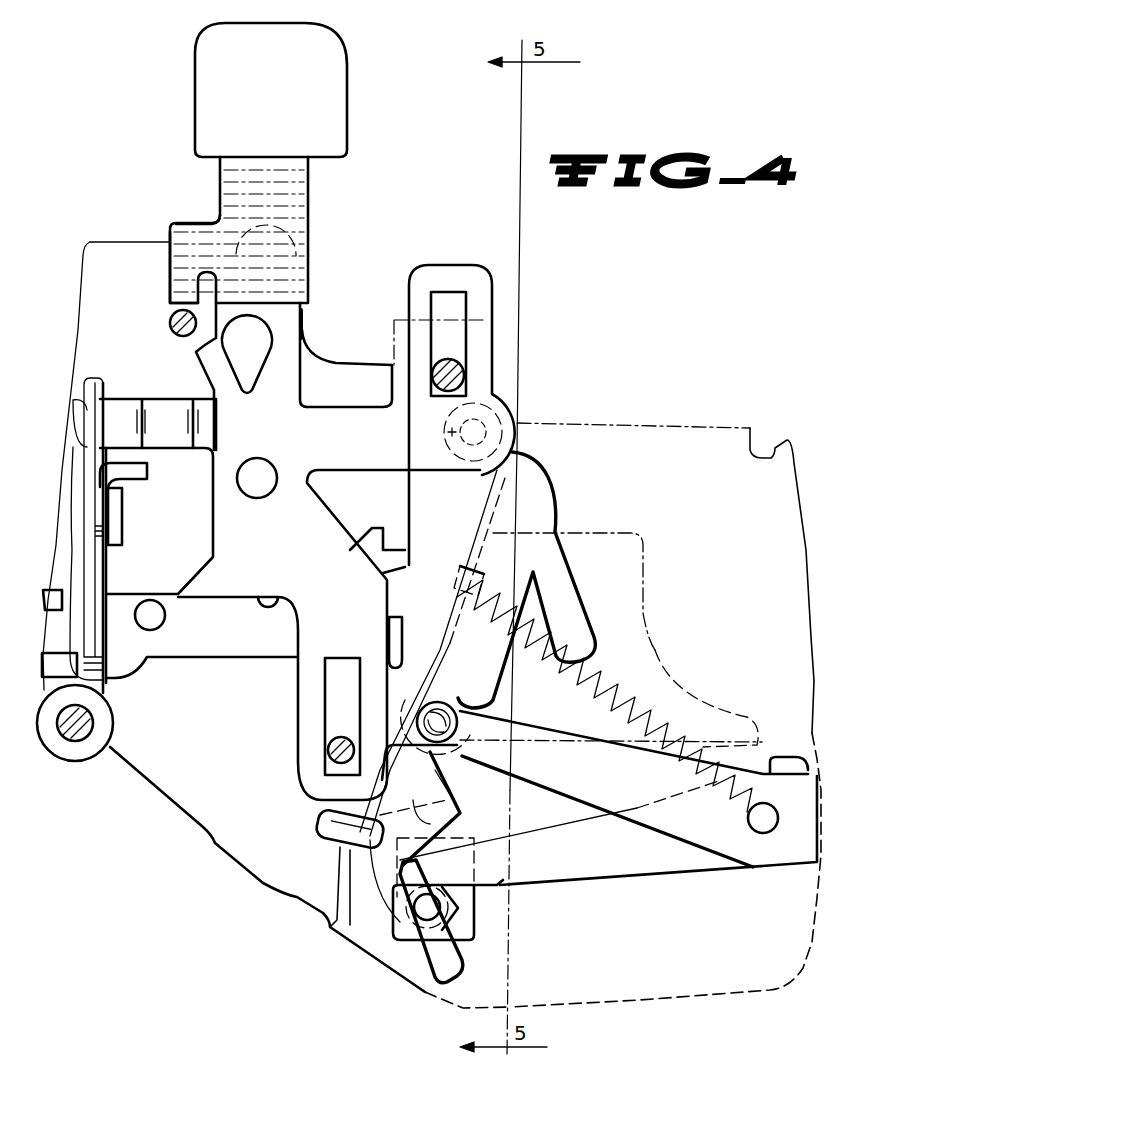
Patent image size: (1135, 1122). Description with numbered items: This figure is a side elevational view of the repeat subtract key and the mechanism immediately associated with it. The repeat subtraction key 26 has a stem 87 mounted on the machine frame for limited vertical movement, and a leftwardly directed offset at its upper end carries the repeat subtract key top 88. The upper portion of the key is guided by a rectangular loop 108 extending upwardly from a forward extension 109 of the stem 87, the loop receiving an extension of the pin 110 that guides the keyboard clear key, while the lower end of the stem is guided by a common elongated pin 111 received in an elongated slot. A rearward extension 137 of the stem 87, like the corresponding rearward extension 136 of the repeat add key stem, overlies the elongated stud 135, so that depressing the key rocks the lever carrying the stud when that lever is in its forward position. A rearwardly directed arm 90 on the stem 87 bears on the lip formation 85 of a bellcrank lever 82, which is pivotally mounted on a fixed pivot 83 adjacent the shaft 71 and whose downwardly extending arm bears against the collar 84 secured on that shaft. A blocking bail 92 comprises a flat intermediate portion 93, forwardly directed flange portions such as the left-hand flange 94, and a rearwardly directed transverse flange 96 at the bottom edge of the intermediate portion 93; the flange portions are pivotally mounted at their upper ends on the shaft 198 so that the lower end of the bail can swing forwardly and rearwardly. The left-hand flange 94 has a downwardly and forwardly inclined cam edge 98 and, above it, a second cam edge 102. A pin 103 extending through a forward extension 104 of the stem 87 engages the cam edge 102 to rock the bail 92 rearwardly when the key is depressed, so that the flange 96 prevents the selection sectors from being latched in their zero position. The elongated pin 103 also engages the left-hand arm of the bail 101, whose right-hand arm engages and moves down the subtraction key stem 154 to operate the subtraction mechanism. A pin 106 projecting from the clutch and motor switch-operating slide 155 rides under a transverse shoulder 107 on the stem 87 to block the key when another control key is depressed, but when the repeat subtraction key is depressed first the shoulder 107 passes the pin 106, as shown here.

The repeat subtract key top 88 is at (205, 120).
The repeat subtraction key 26 is at (210, 158).
The rearward extension 136 is at (195, 222).
The rearward extension 137 is at (170, 272).
The elongated stud 135 is at (170, 323).
The stem 87 is at (302, 324).
The forward extension 109 is at (365, 408).
The rectangular loop 108 is at (408, 292).
The pin 110 is at (462, 376).
The shaft 198 is at (448, 433).
The rearwardly directed arm 90 is at (172, 402).
The lip formation 85 is at (128, 480).
The fixed pivot 83 is at (122, 531).
The bellcrank lever 82 is at (103, 574).
The transverse shoulder 107 is at (238, 596).
The pin 106 is at (156, 628).
The left-hand clutch and motor switch-operating slide 155 is at (236, 655).
The elongated pin 111 is at (322, 768).
The collar 84 is at (82, 758).
The shaft 71 is at (95, 724).
The flange portion 94 is at (533, 478).
The blocking bail 92 is at (388, 630).
The bail 101 is at (555, 780).
The pin 103 is at (452, 700).
The second cam edge 102 is at (458, 814).
The flat intermediate portion 93 is at (448, 792).
The forward extension 104 is at (413, 805).
The cam edge 98 is at (455, 950).
The subtraction key stem 154 is at (465, 918).
The transverse flange 96 is at (325, 845).